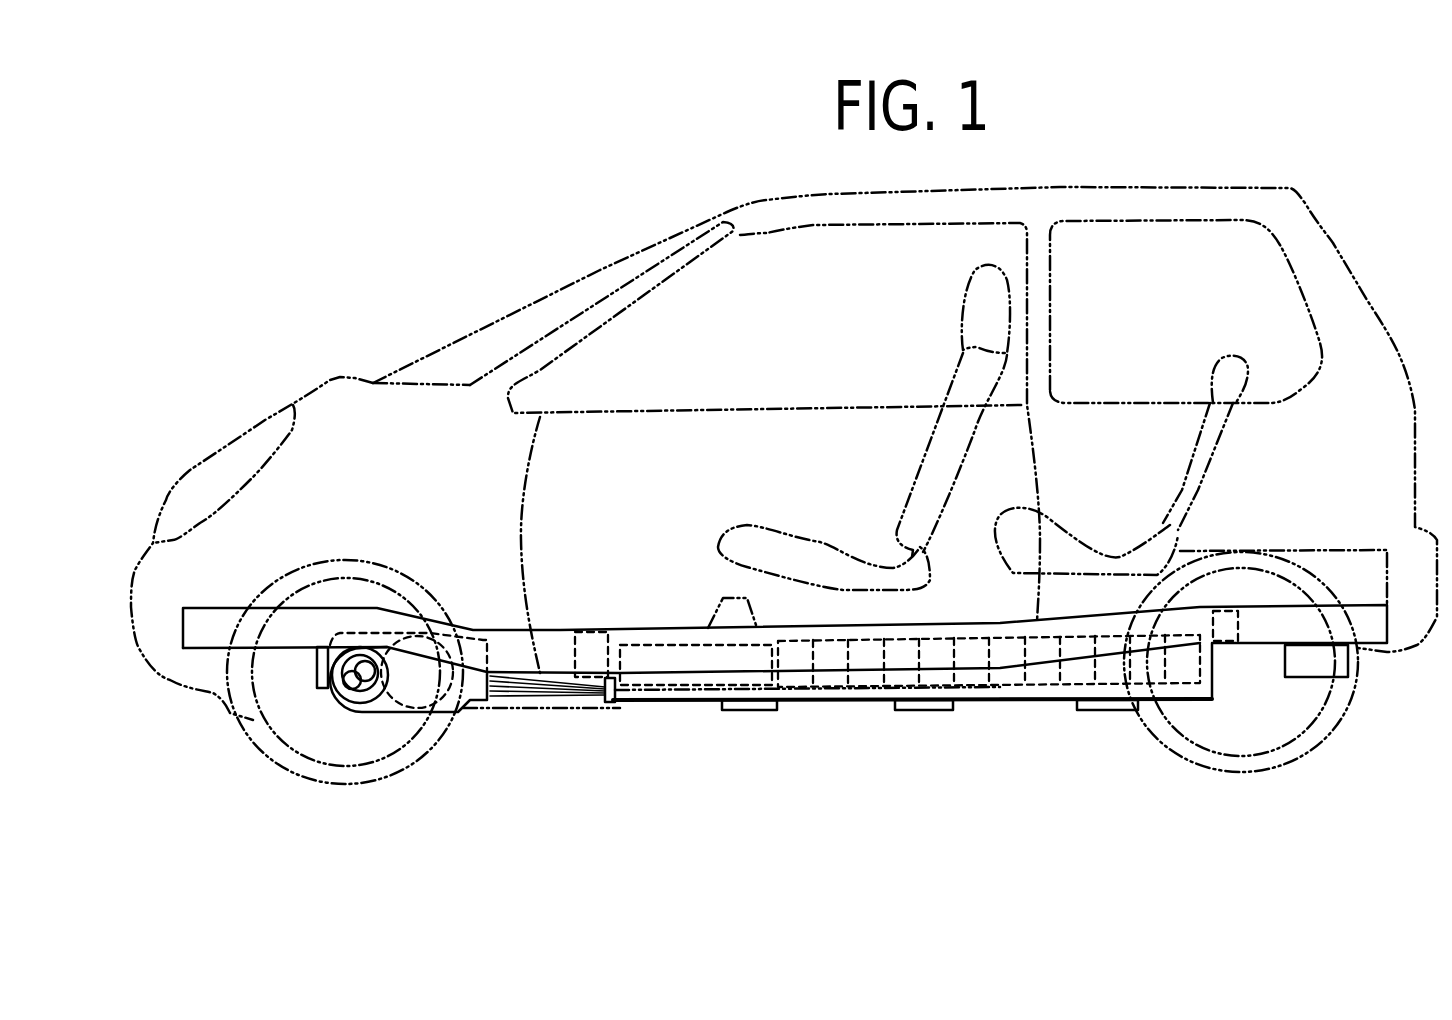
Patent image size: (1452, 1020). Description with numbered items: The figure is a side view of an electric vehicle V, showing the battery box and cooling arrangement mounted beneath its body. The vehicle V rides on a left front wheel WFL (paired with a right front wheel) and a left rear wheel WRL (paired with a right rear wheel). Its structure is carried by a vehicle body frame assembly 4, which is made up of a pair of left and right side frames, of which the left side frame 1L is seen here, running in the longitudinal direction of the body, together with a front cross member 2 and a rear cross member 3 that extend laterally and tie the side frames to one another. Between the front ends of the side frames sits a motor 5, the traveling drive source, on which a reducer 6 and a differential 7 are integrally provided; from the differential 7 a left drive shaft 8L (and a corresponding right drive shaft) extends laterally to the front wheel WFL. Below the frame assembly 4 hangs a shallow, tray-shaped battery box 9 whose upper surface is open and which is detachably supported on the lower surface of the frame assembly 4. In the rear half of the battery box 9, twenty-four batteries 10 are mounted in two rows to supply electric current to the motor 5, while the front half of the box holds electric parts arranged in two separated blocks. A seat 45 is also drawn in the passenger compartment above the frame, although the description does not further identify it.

The electric vehicle V is at (601, 254).
The left side frame 1L is at (635, 627).
The front cross member 2 is at (575, 697).
The rear cross member 3 is at (1230, 627).
The vehicle body frame assembly 4 is at (558, 623).
The motor 5 is at (430, 612).
The reducer 6 is at (457, 688).
The differential 7 is at (318, 657).
The left drive shaft 8L is at (353, 698).
The battery box 9 is at (1070, 688).
The batteries 10 is at (897, 653).
The front seat (46: rear seat) 45 is at (742, 658).
The left front wheel WFL is at (313, 777).
The left rear wheel WRL is at (1230, 770).